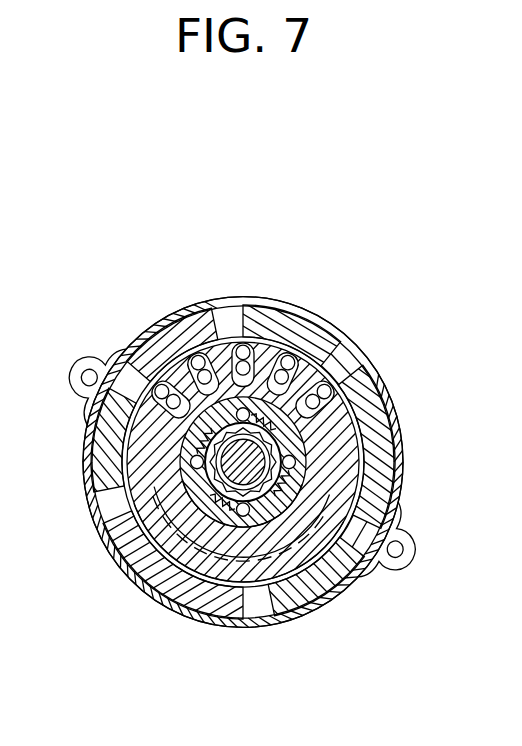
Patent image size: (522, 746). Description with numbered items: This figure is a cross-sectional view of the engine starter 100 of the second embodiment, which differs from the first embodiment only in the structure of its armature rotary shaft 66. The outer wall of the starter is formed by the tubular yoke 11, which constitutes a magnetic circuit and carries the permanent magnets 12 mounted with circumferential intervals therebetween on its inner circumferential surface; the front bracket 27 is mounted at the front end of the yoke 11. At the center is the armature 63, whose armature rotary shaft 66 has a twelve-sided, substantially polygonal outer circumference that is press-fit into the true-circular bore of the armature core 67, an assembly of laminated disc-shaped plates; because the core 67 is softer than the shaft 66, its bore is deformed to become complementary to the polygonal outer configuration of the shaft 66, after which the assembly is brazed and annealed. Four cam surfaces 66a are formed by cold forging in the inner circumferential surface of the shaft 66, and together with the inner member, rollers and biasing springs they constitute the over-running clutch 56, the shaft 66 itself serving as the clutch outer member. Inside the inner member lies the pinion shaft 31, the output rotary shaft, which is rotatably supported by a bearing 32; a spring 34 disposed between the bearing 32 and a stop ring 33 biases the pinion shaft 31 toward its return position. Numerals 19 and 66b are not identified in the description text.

The engine starter 100 is at (219, 252).
The tubular yoke 11 is at (342, 334).
The permanent magnets 12 is at (142, 354).
The roller bearing 19 is at (248, 350).
The front bracket 27 is at (150, 577).
The pinion shaft 31 is at (162, 470).
The bearing 32 is at (150, 443).
The stop ring 33 is at (355, 395).
The spring 34 is at (338, 565).
The over-running clutch mechanism 56 is at (320, 487).
The armature 63 is at (362, 428).
The armature rotary shaft 66 is at (190, 435).
The cam surfaces 66a is at (238, 402).
The dashed arc track 66b is at (150, 582).
The armature core 67 is at (384, 455).